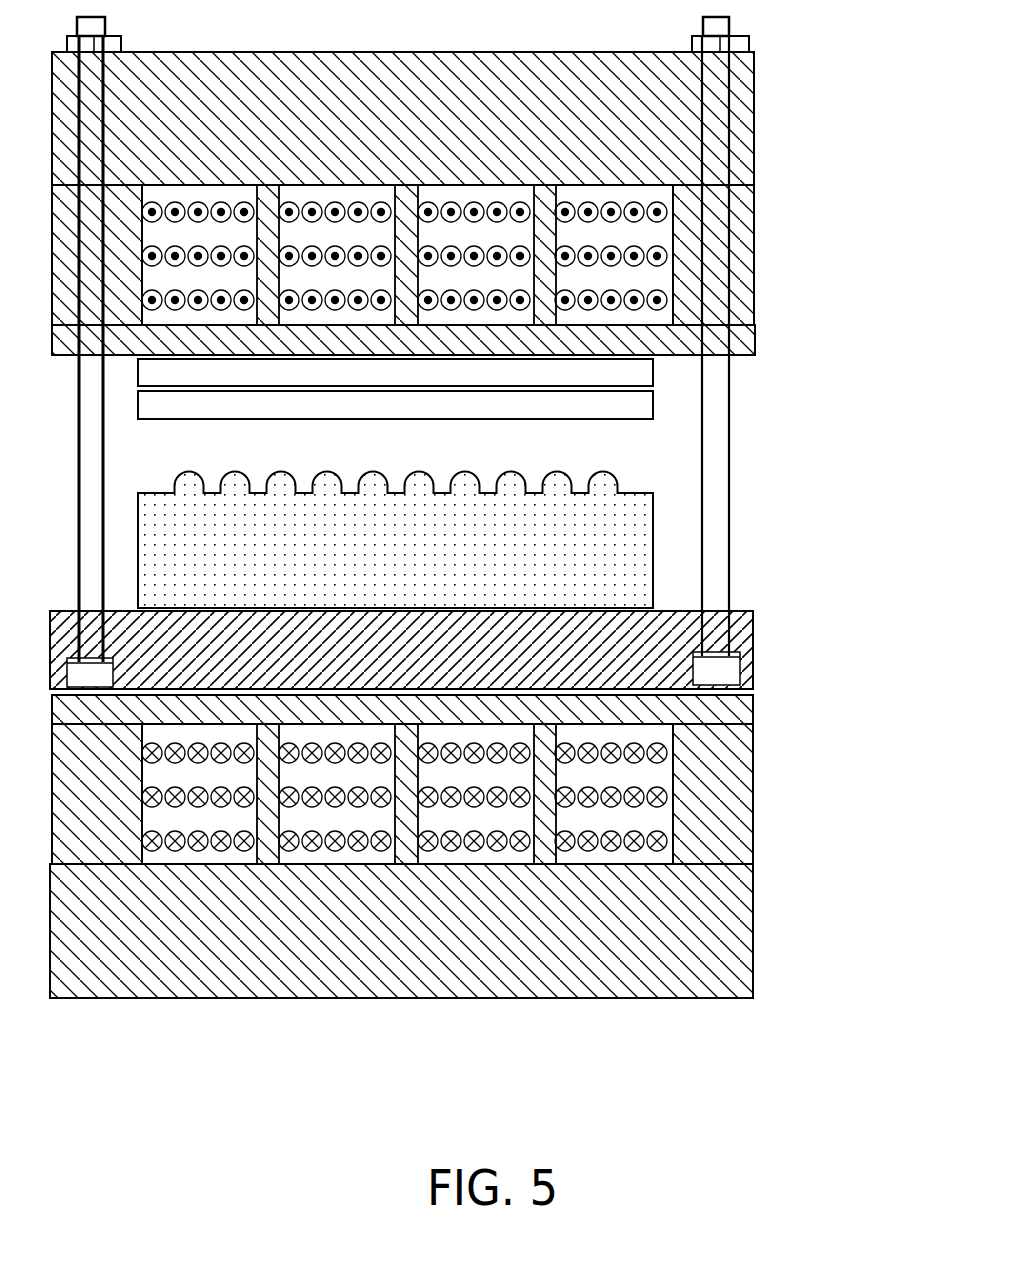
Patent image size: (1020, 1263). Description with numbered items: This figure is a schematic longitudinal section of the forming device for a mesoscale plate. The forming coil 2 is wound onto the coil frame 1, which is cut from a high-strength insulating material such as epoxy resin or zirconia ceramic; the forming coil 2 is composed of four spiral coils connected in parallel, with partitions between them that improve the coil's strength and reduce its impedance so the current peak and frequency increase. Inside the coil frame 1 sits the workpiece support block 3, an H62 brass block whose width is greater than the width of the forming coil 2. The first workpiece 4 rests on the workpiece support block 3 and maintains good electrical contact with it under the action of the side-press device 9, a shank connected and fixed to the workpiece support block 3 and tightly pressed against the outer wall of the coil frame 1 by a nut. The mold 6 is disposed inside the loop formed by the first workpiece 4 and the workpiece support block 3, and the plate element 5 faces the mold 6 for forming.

The coil frame 1 is at (658, 883).
The forming coil 2 is at (648, 222).
The workpiece support block 3 is at (745, 628).
The first workpiece 4 is at (616, 372).
The lower mold plate 5 is at (616, 403).
The mold 6 is at (616, 502).
The side-press device 9 is at (717, 578).